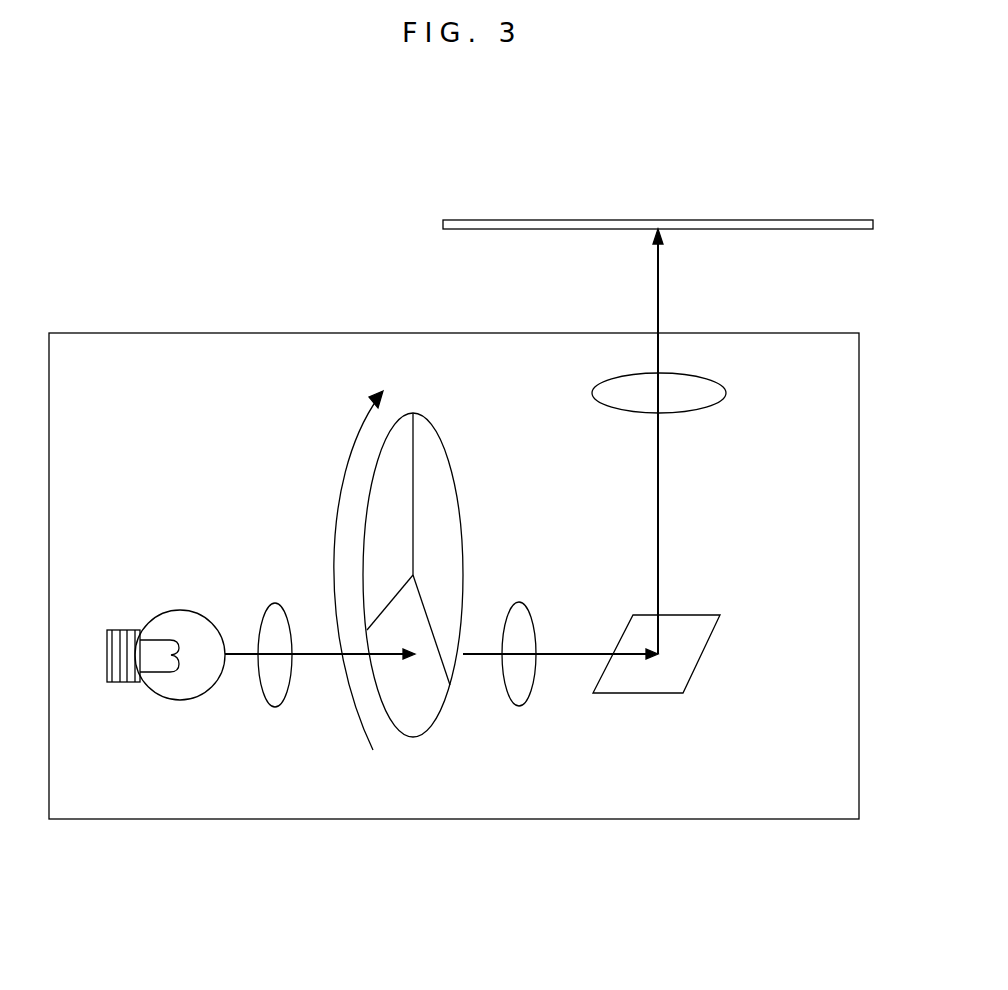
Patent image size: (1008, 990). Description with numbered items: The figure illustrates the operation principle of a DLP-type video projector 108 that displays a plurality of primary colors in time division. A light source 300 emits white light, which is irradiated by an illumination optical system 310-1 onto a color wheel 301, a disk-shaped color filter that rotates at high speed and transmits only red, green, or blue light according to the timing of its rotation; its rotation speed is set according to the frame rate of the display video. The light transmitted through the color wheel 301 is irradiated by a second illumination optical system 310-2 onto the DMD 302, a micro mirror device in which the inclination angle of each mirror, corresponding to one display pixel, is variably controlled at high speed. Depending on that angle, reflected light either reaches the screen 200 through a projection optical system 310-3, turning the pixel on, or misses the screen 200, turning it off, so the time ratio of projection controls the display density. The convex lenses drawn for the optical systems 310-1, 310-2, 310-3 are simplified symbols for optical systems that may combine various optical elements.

The video projector 108 is at (121, 332).
The screen 200 is at (752, 218).
The light source 300 is at (180, 700).
The color wheel 301 is at (440, 717).
The DMD 302 is at (693, 613).
The illumination optical system 310-1 is at (280, 707).
The illumination optical system 310-2 is at (520, 708).
The projection optical system 310-3 is at (758, 367).